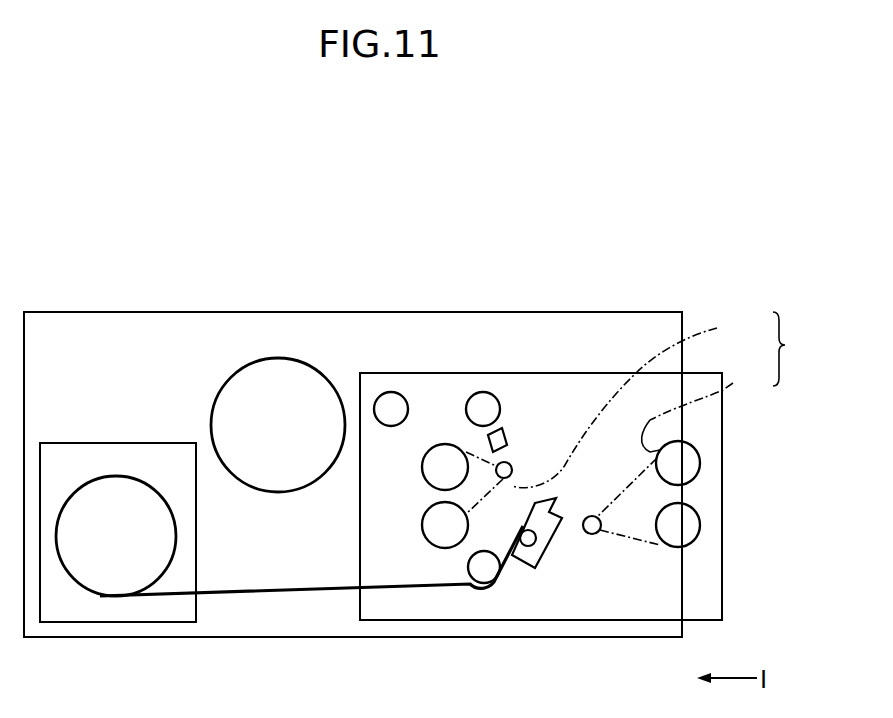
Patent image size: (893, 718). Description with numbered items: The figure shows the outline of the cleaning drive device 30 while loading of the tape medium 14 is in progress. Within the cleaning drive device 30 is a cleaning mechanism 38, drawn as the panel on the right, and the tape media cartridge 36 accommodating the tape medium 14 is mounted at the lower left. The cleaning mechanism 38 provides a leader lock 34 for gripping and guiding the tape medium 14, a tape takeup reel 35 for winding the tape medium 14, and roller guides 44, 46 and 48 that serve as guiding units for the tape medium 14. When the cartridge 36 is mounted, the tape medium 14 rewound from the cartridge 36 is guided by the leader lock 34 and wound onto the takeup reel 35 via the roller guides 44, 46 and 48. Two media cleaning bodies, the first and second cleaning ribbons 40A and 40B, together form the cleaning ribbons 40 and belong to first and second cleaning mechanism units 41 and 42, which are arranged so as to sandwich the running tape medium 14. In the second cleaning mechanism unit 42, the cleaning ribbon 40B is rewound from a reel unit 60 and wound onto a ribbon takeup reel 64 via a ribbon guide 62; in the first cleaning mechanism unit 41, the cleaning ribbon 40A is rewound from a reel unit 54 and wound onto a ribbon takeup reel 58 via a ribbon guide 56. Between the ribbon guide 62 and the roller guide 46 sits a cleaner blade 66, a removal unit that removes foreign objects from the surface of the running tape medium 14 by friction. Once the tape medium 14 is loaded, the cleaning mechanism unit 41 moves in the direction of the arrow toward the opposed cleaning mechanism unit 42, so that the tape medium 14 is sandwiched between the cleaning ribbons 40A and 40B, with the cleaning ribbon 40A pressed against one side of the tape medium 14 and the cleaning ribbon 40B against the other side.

The cleaning drive device 30 is at (288, 312).
The tape takeup reel 35 is at (238, 371).
The tape media cartridge 36 is at (70, 622).
The tape medium 14 is at (160, 598).
The cleaning mechanism 38 is at (722, 575).
The roller guide 48 is at (382, 392).
The roller guide 46 is at (483, 392).
The ribbon takeup reel 64 is at (440, 445).
The reel unit 60 is at (438, 548).
The roller guide 44 is at (484, 583).
The ribbon guide 62 is at (512, 465).
The cleaner blade 66 is at (503, 430).
The leader lock 34 is at (545, 550).
The ribbon guide 56 is at (591, 534).
The ribbon takeup reel 58 is at (697, 460).
The reel unit 54 is at (700, 525).
The second cleaning ribbon 40B is at (641, 400).
The first cleaning ribbon 40A is at (684, 436).
The cleaning ribbons 40 is at (795, 349).
The second cleaning mechanism unit 42 is at (412, 510).
The first cleaning mechanism unit 41 is at (643, 522).